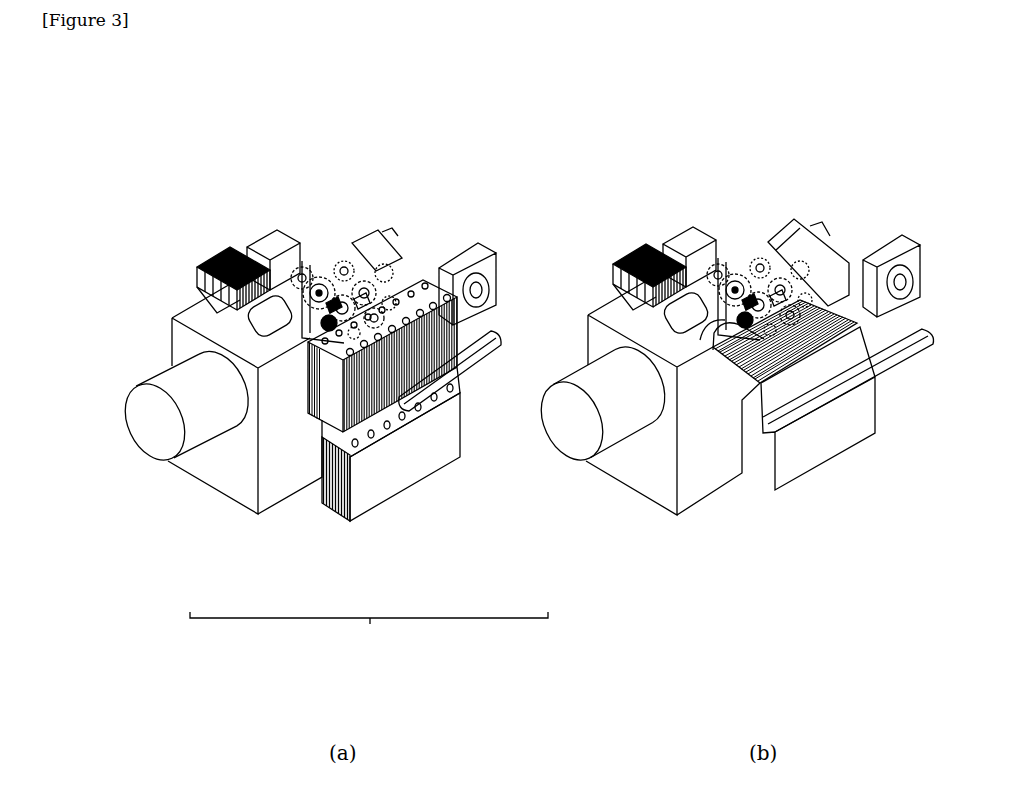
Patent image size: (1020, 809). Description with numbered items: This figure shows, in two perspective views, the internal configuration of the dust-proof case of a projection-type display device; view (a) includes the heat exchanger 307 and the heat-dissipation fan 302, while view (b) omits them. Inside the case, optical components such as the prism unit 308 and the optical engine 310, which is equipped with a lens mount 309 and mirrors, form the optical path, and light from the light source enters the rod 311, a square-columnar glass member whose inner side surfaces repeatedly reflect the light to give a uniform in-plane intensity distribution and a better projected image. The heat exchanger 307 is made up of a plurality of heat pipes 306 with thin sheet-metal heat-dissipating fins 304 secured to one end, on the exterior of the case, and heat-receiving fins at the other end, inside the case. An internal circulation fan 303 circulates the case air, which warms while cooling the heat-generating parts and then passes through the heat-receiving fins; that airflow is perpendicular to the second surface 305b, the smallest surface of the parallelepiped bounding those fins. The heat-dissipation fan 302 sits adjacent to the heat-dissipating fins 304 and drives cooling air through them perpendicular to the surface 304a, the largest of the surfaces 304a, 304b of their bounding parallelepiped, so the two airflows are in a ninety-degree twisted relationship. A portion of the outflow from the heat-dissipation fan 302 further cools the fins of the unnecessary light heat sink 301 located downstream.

The unnecessary light heat sink 301 is at (252, 250).
The heat-dissipation fan 302 is at (377, 237).
The internal circulation fan 303 is at (463, 240).
The heat-dissipating fins 304 is at (320, 413).
The surface 304a is at (462, 345).
The surface 304b is at (240, 444).
The second surface 305b is at (307, 510).
The heat pipes 306 is at (397, 503).
The heat exchanger 307 is at (369, 633).
The prism unit 308 is at (405, 408).
The lens mount 309 is at (695, 482).
The optical engine 310 is at (822, 443).
The rod 311 is at (907, 370).